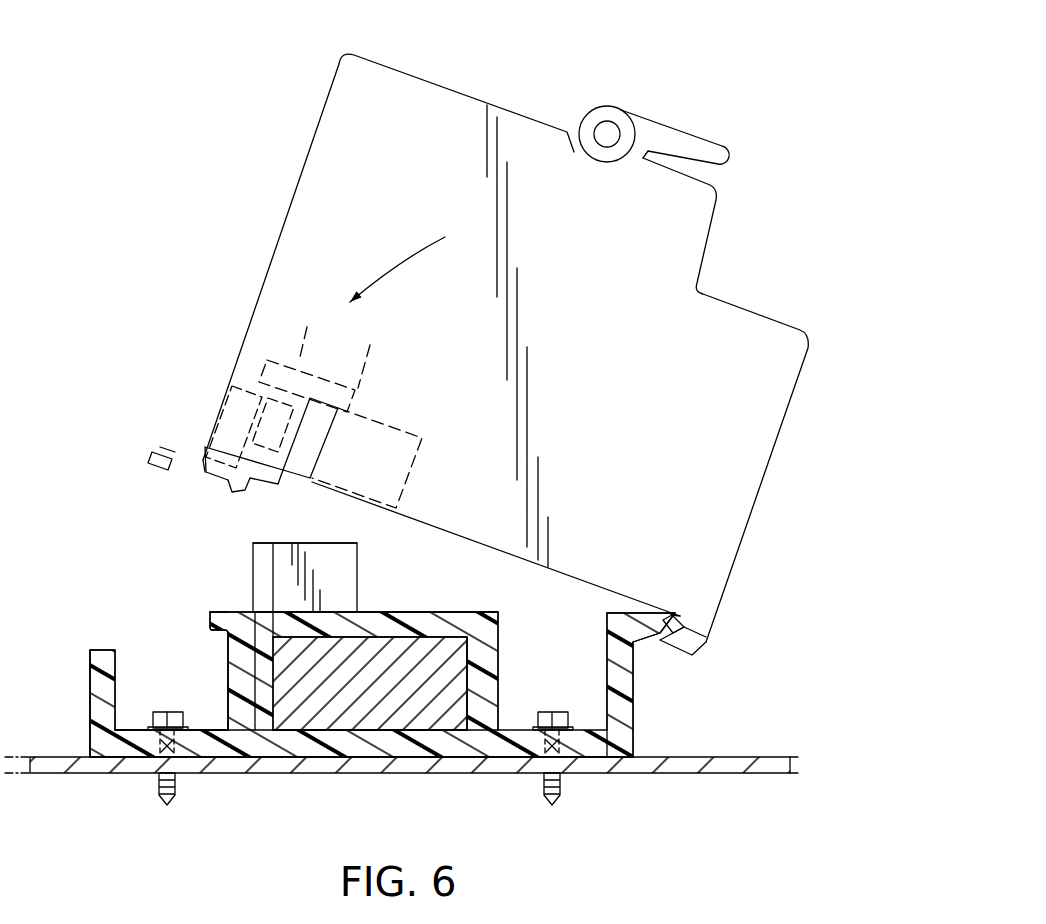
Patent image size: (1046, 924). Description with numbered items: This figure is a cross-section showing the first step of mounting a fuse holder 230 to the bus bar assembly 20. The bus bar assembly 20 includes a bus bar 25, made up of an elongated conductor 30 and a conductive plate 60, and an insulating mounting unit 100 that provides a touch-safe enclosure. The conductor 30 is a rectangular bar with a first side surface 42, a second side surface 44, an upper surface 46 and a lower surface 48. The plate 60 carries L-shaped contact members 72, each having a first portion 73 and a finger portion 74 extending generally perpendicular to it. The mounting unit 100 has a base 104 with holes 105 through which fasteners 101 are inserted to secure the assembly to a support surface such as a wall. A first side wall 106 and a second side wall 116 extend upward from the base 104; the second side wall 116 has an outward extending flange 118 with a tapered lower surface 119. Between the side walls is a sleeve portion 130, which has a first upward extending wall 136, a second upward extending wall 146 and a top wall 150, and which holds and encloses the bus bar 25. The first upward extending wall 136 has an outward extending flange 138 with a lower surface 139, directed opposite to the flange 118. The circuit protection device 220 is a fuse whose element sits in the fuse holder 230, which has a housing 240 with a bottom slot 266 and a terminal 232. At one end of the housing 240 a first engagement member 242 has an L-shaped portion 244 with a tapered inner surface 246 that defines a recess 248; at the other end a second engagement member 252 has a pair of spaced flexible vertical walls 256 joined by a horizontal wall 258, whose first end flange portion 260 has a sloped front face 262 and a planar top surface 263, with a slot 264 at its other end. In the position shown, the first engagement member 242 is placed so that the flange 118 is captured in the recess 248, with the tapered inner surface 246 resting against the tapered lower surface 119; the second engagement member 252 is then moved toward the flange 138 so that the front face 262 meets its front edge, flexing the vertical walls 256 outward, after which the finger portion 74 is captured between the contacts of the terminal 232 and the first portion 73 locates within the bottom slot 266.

The bus bar assembly 20 is at (100, 602).
The bus bar 25 is at (220, 555).
The elongated conductor 30 is at (435, 724).
The first side surface 42 is at (253, 650).
The second side surface 44 is at (470, 680).
The upper surface 46 is at (445, 612).
The lower surface 48 is at (383, 735).
The conductive plate 60 is at (258, 660).
The L-shaped contact member 72 is at (367, 547).
The first portion 73 is at (253, 565).
The finger portion 74 is at (345, 582).
The mounting unit 100 is at (155, 592).
The fasteners 101 is at (147, 720).
The base 104 is at (343, 745).
The holes 105 is at (180, 777).
The first side wall 106 is at (92, 663).
The second side wall 116 is at (622, 698).
The flange 118 is at (652, 616).
The tapered lower surface 119 is at (648, 634).
The sleeve portion 130 is at (387, 604).
The first upward extending wall 136 is at (233, 684).
The flange 138 is at (218, 616).
The lower surface 139 is at (213, 640).
The second upward extending wall 146 is at (490, 655).
The top wall 150 is at (397, 622).
The circuit protection device 220 is at (522, 70).
The fuse holder 230 is at (418, 58).
The terminal 232 is at (395, 456).
The housing 240 is at (725, 327).
The first engagement member 242 is at (712, 634).
The L-shaped portion 244 is at (697, 648).
The tapered inner surface 246 is at (685, 618).
The recess 248 is at (690, 628).
The second engagement member 252 is at (158, 446).
The vertical walls 256 is at (218, 458).
The horizontal wall 258 is at (208, 455).
The first end flange portion 260 is at (236, 490).
The sloped front face 262 is at (247, 492).
The planar top surface 263 is at (250, 477).
The slot 264 is at (150, 458).
The bottom slot 266 is at (318, 432).